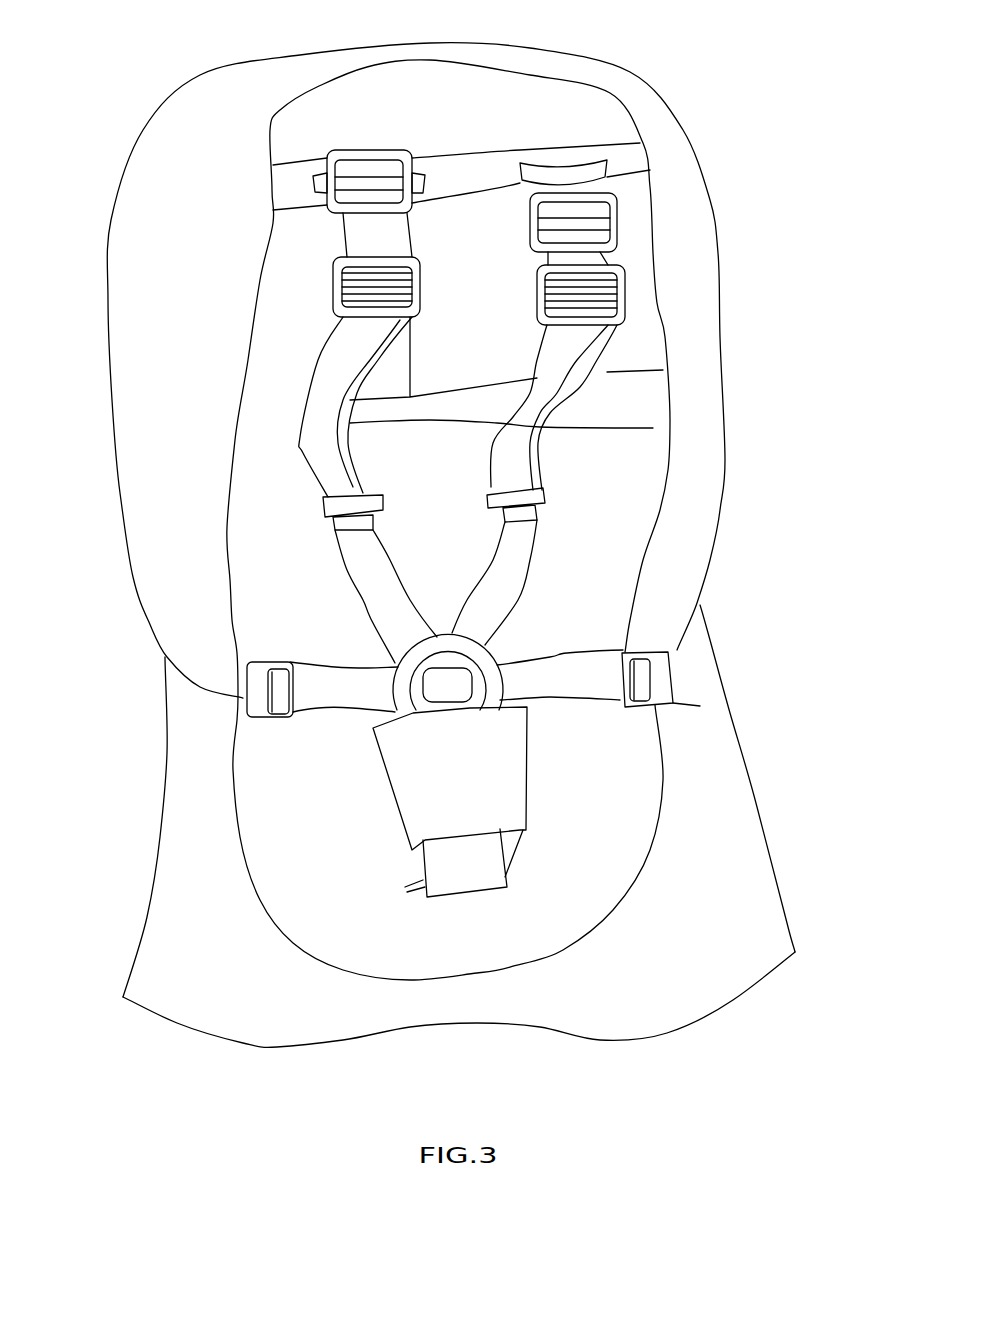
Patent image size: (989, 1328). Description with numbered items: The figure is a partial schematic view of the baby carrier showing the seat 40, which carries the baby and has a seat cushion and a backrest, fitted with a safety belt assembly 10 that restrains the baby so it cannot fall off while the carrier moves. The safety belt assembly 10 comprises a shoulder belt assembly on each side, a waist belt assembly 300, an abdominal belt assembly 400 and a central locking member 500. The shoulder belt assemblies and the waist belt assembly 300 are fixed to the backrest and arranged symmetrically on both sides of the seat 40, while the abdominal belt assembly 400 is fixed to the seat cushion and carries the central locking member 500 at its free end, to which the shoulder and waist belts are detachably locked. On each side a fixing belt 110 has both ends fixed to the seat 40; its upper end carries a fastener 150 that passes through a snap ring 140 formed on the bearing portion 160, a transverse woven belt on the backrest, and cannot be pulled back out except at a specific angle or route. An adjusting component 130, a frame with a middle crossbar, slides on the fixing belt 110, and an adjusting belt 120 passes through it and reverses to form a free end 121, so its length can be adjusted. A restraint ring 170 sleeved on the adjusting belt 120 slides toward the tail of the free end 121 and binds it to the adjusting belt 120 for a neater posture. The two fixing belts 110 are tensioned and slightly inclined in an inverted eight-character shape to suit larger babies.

The safety belt assembly 10 is at (297, 605).
The seat 40 is at (680, 248).
The fixing belt 110 is at (350, 240).
The adjusting belt 120 is at (357, 550).
The free end 121 is at (333, 397).
The adjusting component 130 is at (333, 290).
The snap ring 140 is at (603, 163).
The fastener 150 is at (330, 155).
The bearing portion 160 is at (633, 166).
The restraint ring 170 is at (327, 497).
The waist belt assembly 300 is at (572, 688).
The abdominal belt assembly 400 is at (467, 863).
The central locking member 500 is at (437, 690).